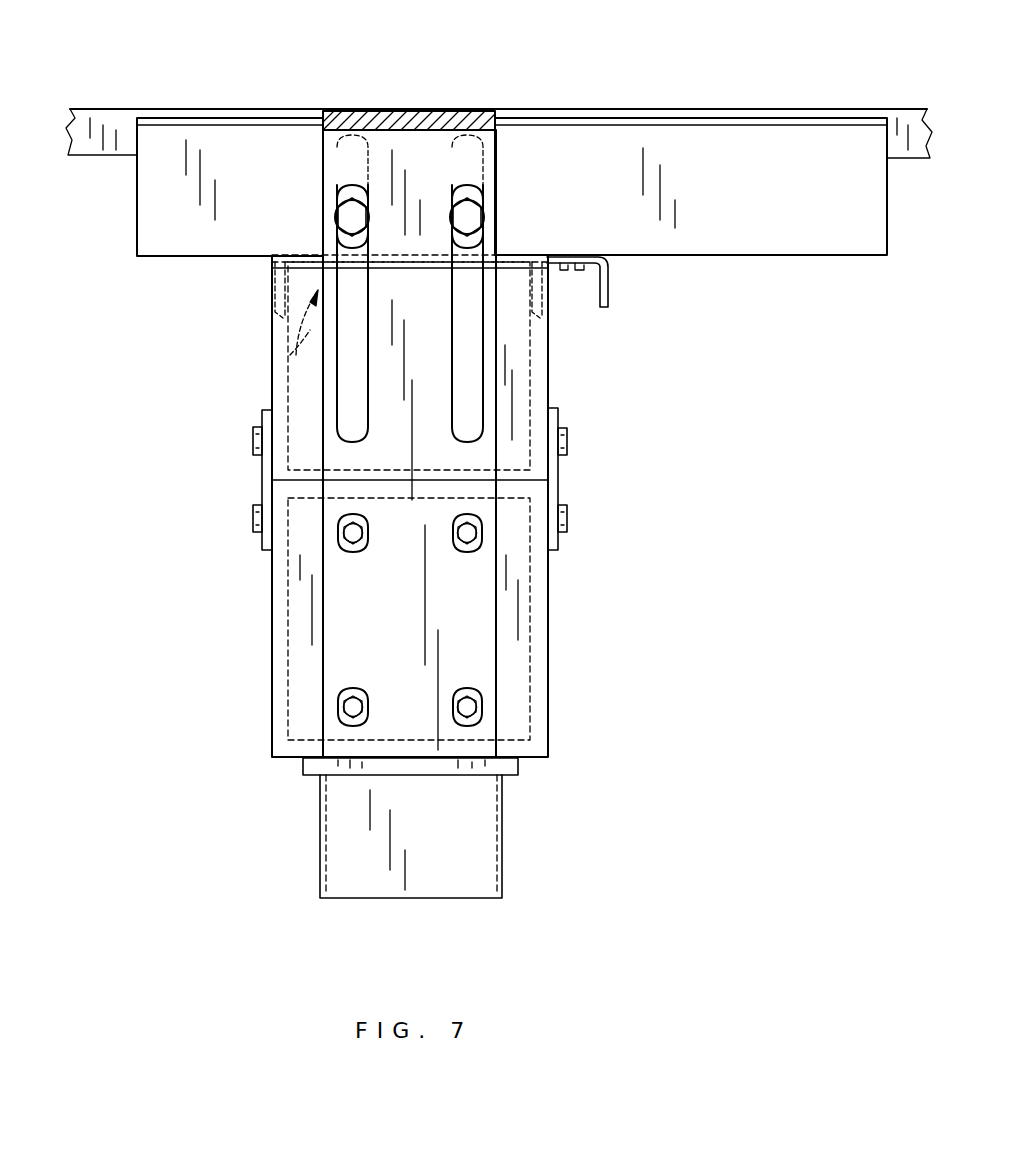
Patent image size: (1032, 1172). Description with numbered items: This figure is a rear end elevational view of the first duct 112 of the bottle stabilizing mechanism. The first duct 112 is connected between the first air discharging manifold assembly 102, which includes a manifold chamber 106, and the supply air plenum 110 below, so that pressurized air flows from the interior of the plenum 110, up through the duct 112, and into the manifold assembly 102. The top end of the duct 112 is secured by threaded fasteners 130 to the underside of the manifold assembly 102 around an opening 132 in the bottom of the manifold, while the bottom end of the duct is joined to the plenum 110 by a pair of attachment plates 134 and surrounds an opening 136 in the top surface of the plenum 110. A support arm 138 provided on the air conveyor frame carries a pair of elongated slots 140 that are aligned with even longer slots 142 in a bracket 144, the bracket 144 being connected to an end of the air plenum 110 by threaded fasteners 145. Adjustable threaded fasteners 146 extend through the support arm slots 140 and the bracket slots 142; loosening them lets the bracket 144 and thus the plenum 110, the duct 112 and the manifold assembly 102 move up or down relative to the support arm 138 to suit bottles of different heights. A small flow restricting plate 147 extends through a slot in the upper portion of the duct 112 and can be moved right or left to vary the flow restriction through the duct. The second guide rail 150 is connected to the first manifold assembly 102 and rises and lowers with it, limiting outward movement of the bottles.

The first air discharging manifold assembly 102 is at (133, 225).
The manifold chamber 106 is at (562, 125).
The supply air plenum 110 is at (272, 632).
The first duct 112 is at (272, 383).
The threaded fasteners 130 is at (272, 287).
The opening 132 is at (290, 355).
The attachment plates 134 is at (262, 478).
The opening 136 is at (463, 467).
The support arm 138 is at (314, 122).
The elongated slots 140 is at (345, 190).
The bracket slots 142 is at (355, 398).
The bracket 144 is at (355, 580).
The threaded fasteners 145 is at (352, 708).
The adjustable threaded fasteners 146 is at (455, 215).
The flow restricting plate 147 is at (610, 290).
The second guide rail 150 is at (92, 108).